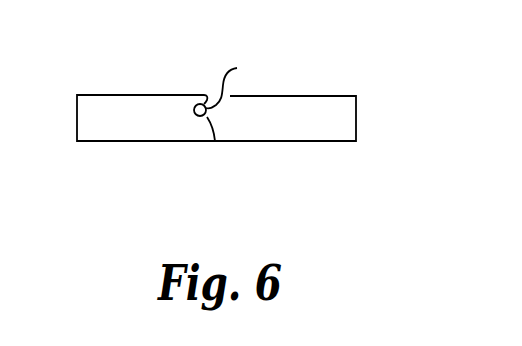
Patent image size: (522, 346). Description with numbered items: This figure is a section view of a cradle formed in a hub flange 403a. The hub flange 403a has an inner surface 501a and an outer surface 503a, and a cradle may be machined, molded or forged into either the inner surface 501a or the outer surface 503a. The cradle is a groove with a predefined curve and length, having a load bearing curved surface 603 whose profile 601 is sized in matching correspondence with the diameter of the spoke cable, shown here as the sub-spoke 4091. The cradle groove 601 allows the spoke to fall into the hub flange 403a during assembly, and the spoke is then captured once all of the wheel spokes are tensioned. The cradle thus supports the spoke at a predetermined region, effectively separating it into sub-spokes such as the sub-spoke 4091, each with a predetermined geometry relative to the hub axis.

The hub flange 403a is at (137, 128).
The outer surface 503a is at (335, 96).
The inner surface 501a is at (335, 141).
The load bearing curved surface 603 is at (230, 96).
The sub-spoke 4091 is at (253, 83).
The cradle groove profile 601 is at (215, 141).